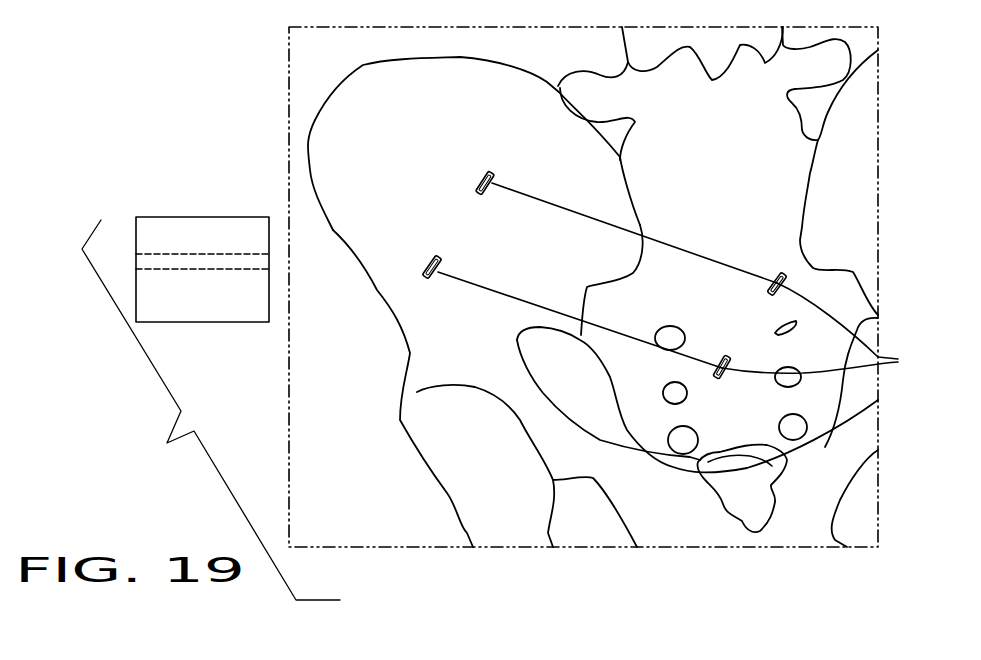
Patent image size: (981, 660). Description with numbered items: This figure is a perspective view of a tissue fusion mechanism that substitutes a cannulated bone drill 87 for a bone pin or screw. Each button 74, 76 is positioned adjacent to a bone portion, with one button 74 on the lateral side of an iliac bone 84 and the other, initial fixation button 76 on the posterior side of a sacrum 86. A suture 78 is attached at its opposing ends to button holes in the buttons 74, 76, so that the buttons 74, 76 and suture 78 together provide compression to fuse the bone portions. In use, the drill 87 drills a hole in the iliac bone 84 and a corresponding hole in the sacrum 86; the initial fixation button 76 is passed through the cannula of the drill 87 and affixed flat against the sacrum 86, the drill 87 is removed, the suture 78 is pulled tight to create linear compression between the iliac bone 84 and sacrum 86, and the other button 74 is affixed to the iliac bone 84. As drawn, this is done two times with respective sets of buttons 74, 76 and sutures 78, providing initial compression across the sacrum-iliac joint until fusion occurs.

The button 74 is at (474, 190).
The initial fixation button 76 is at (824, 328).
The suture 78 is at (517, 193).
The iliac bone 84 is at (330, 117).
The sacrum 86 is at (767, 263).
The cannulated bone drill 87 is at (222, 323).